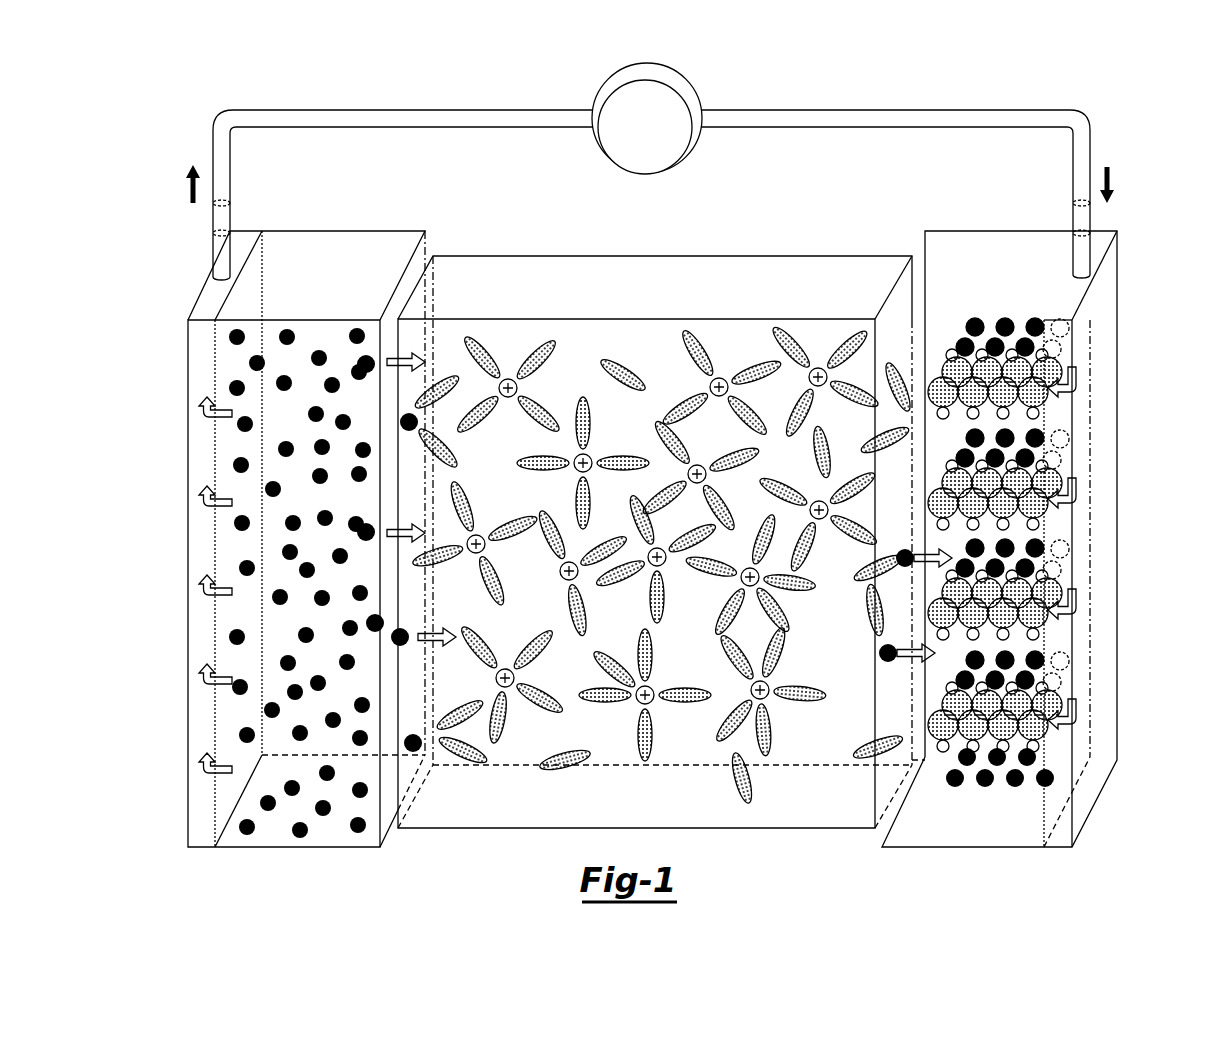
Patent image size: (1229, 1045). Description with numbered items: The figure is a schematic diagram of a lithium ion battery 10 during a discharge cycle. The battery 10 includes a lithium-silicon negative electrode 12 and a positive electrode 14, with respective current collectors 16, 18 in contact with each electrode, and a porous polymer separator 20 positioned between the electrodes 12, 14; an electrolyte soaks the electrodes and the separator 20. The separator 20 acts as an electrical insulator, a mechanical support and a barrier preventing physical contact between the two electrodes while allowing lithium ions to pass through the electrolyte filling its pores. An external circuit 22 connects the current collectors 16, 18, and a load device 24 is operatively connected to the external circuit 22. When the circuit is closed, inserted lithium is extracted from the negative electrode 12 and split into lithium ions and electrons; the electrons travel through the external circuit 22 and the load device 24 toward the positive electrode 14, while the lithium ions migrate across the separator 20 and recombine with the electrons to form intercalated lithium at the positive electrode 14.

The lithium ion battery 10 is at (665, 452).
The lithium-silicon negative electrode 12 is at (273, 511).
The positive electrode 14 is at (1016, 510).
The current collector 16 is at (204, 818).
The current collector 18 is at (1060, 829).
The porous polymer separator 20 is at (670, 283).
The external circuit 22 is at (483, 110).
The load device 24 is at (695, 96).